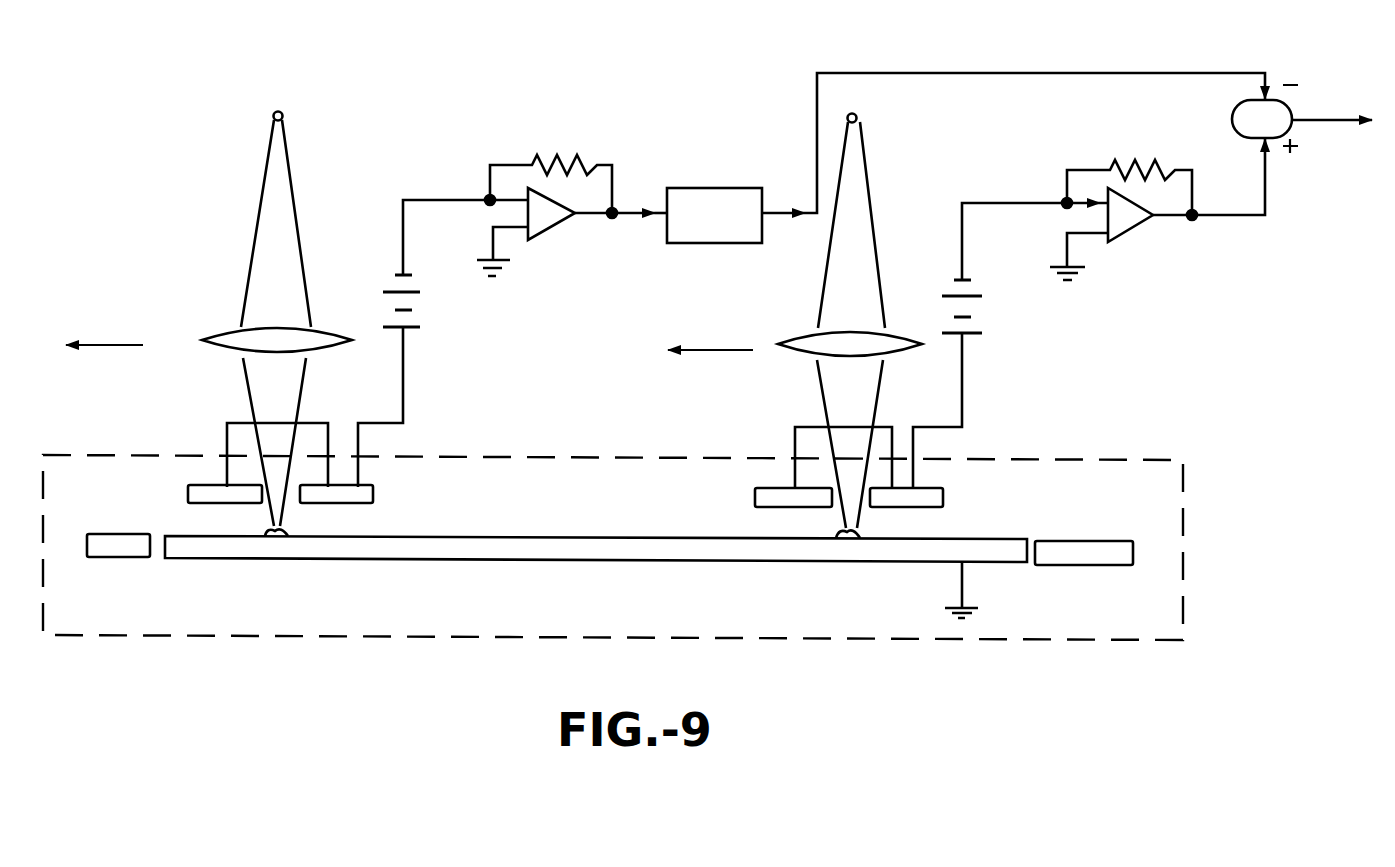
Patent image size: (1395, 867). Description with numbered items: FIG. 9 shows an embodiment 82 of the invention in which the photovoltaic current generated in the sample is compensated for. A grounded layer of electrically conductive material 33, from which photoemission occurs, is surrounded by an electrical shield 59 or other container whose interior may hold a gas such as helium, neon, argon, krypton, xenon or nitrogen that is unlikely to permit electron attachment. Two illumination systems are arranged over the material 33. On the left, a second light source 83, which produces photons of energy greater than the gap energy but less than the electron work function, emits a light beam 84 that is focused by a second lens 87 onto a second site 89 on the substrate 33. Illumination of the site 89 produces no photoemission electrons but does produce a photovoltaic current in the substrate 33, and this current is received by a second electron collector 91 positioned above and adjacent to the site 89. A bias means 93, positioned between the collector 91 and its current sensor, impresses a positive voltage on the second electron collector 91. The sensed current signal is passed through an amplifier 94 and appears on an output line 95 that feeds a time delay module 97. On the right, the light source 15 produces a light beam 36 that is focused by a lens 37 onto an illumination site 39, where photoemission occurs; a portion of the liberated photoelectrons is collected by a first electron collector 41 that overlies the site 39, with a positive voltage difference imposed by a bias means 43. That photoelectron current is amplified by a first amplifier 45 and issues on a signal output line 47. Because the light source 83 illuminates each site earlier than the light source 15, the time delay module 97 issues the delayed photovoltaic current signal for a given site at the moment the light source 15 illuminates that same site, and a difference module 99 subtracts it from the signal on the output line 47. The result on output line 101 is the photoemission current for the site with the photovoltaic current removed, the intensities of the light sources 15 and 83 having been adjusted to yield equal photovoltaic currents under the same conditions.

The embodiment 82 is at (198, 86).
The light source 83 is at (283, 113).
The light beam 84 is at (280, 215).
The second lens 87 is at (233, 334).
The site 89 is at (277, 537).
The second electron collector 91 is at (203, 498).
The bias means 93 is at (413, 293).
The amplifier 94 is at (533, 121).
The output line 95 is at (587, 217).
The time delay module 97 is at (720, 244).
The light source 15 is at (858, 116).
The light beam 36 is at (853, 217).
The lens 37 is at (895, 343).
The illumination site 39 is at (848, 540).
The first electron collector 41 is at (778, 500).
The bias means 43 is at (980, 297).
The first amplifier 45 is at (1073, 133).
The signal output line 47 is at (1160, 220).
The difference module 99 is at (1287, 105).
The output line 101 is at (1332, 122).
The layer of electrically conductive material 33 is at (553, 556).
The electrical shield 59 is at (1185, 560).